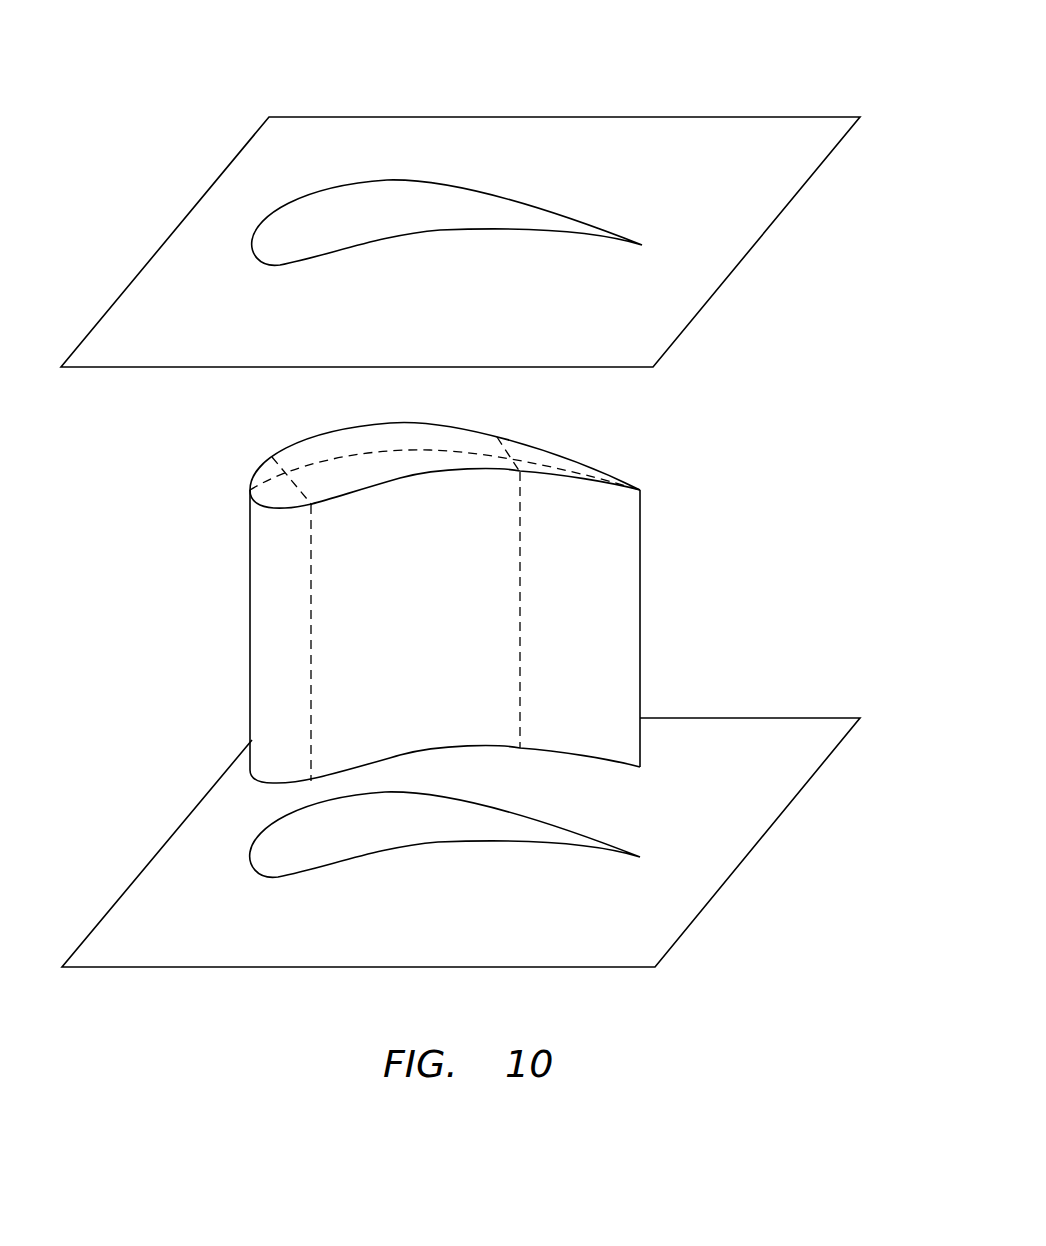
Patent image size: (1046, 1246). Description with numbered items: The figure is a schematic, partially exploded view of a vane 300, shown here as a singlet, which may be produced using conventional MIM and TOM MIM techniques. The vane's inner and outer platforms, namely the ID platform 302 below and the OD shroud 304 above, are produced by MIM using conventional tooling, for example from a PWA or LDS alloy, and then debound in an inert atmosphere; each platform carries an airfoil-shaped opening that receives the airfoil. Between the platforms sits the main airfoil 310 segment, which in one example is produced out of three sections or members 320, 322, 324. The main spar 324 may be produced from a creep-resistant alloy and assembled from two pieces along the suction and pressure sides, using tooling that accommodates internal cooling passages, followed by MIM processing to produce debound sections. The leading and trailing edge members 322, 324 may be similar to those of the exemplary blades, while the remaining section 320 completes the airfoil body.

The vane 300 is at (176, 126).
The ID platform 302 is at (160, 990).
The OD shroud 304 is at (668, 97).
The main airfoil 310 is at (685, 510).
The airfoil section 320 is at (452, 522).
The leading edge member 322 is at (275, 610).
The main spar 324 is at (607, 607).